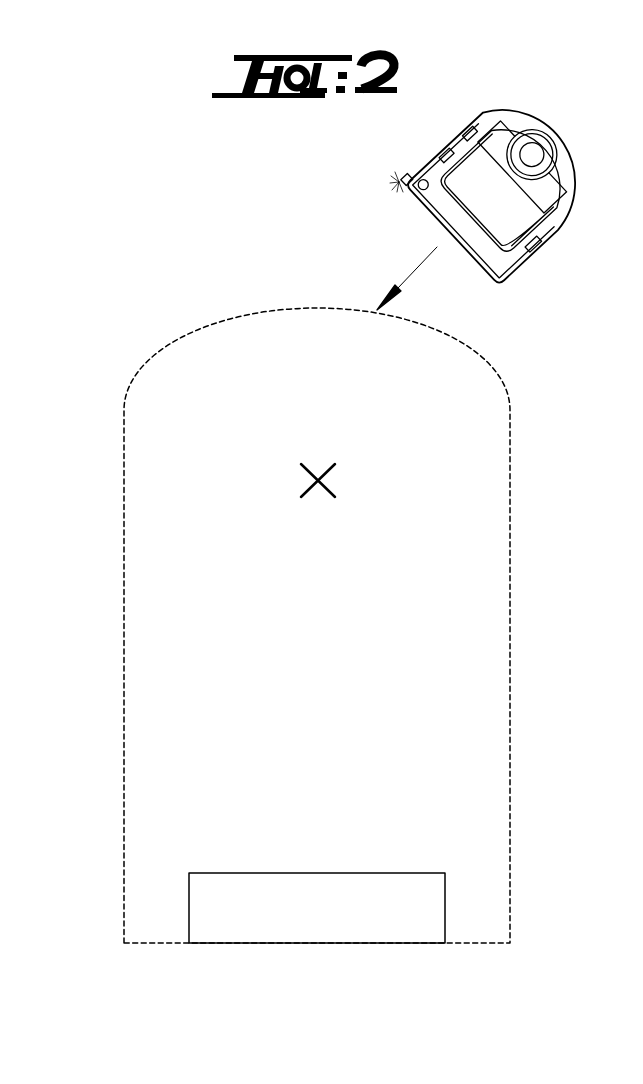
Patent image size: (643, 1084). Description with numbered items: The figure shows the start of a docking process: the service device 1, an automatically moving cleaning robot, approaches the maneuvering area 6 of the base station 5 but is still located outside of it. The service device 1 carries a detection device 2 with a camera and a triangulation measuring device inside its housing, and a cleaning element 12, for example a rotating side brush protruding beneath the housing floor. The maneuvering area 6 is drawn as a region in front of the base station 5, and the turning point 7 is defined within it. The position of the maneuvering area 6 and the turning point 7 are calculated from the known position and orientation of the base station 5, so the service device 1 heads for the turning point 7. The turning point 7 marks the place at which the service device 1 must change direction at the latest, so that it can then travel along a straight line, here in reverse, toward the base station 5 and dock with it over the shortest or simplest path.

The service device 1 is at (376, 212).
The detection device 2 is at (533, 156).
The cleaning element 12 is at (400, 175).
The base station 5 is at (220, 888).
The maneuvering area 6 is at (163, 552).
The turning point 7 is at (313, 480).